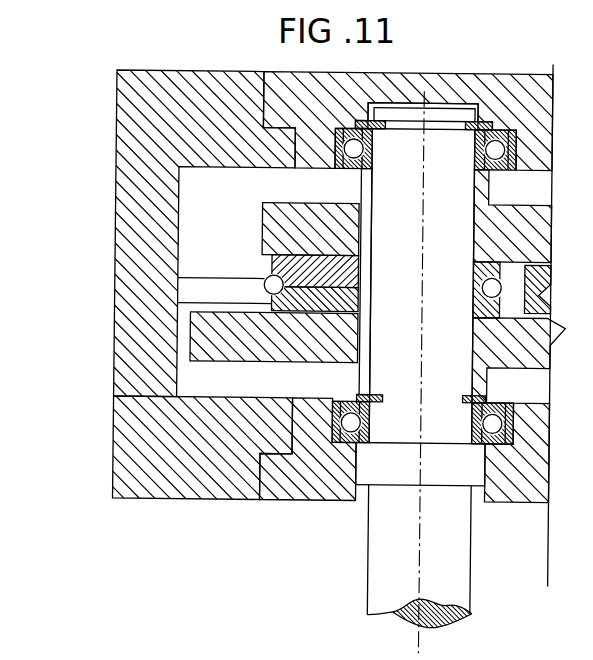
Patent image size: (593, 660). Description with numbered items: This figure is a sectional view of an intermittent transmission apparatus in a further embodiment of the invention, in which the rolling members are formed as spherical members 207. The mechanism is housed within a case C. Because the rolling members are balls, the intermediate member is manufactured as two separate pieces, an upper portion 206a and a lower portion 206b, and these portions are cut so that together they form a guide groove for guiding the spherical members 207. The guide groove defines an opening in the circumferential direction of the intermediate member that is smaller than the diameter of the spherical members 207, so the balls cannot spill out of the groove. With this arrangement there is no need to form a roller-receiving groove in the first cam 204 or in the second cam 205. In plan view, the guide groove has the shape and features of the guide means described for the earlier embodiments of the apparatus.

The case C is at (160, 88).
The first cam 204 is at (262, 204).
The second cam 205 is at (233, 358).
The upper portion of intermediate member 206a is at (260, 253).
The lower portion of intermediate member 206b is at (182, 300).
The spherical members 207 is at (263, 282).